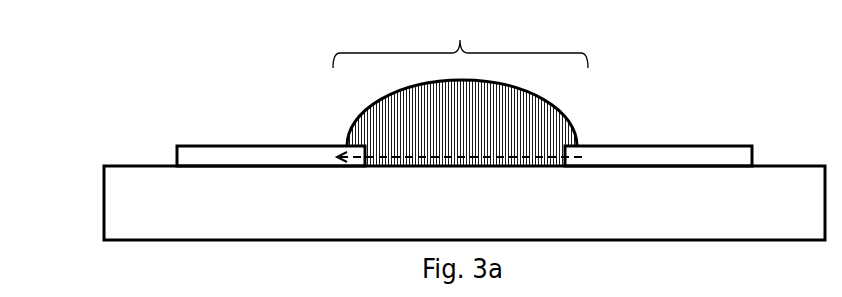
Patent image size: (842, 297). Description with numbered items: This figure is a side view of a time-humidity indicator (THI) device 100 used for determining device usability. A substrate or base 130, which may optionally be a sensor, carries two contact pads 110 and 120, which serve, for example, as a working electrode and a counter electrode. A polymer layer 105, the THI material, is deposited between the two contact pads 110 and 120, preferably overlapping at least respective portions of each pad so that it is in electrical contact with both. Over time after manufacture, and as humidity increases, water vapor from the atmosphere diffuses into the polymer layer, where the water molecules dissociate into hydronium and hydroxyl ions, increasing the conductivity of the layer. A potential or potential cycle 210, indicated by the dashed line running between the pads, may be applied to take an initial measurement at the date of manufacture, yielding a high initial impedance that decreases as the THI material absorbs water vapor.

The THI device 100 is at (138, 63).
The polymer layer 105 is at (460, 39).
The contact pad 110 is at (192, 151).
The contact pad 120 is at (723, 152).
The substrate or base 130 is at (117, 213).
The potential or potential cycle 210 is at (533, 158).